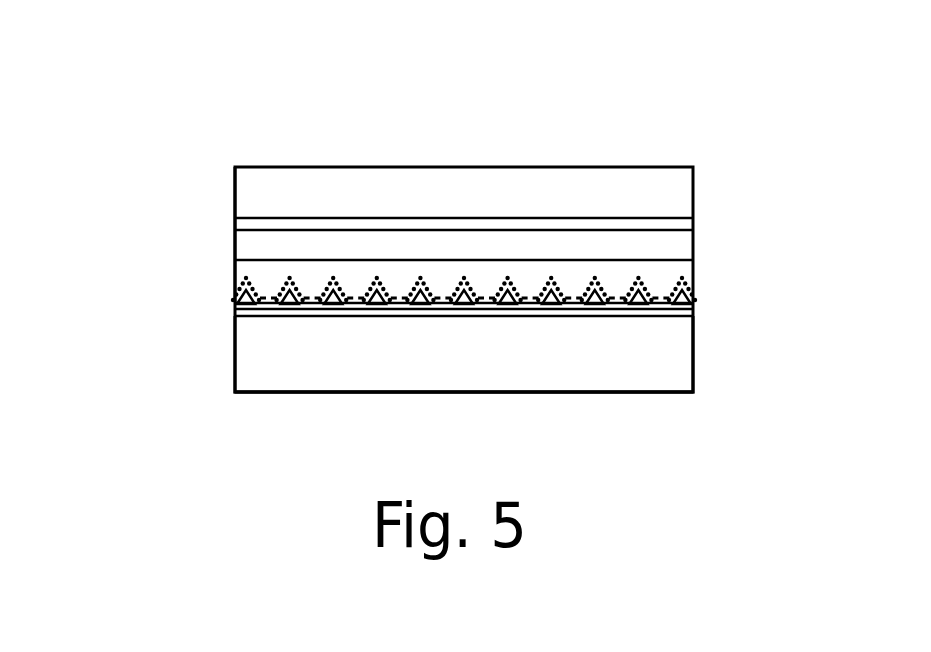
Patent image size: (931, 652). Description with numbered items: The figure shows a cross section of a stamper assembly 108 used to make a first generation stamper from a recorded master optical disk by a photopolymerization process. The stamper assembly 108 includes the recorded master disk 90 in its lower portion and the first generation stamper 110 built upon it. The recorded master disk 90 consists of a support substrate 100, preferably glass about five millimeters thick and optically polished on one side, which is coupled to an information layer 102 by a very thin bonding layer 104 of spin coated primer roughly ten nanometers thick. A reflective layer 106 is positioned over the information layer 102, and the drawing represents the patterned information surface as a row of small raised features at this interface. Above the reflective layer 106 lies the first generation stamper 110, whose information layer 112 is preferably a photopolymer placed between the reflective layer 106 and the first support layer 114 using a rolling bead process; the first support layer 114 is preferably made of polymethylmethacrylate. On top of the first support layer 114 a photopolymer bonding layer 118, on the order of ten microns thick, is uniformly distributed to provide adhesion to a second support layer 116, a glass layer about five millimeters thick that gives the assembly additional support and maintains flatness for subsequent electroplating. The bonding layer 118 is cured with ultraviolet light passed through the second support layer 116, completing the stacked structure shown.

The recorded master disk 90 is at (201, 382).
The support substrate 100 is at (568, 368).
The information layer 102 is at (687, 305).
The bonding layer 104 is at (633, 310).
The reflective layer 106 is at (684, 298).
The stamper assembly 108 is at (296, 86).
The first generation stamper 110 is at (182, 220).
The information layer 112 is at (662, 273).
The first support layer 114 is at (653, 240).
The second support layer 116 is at (486, 185).
The photopolymer bonding layer 118 is at (622, 220).